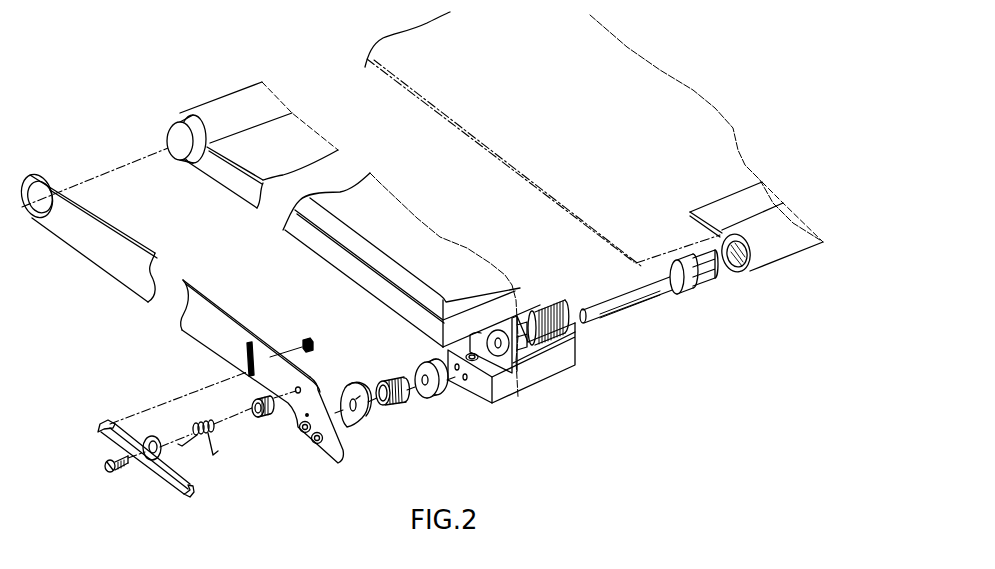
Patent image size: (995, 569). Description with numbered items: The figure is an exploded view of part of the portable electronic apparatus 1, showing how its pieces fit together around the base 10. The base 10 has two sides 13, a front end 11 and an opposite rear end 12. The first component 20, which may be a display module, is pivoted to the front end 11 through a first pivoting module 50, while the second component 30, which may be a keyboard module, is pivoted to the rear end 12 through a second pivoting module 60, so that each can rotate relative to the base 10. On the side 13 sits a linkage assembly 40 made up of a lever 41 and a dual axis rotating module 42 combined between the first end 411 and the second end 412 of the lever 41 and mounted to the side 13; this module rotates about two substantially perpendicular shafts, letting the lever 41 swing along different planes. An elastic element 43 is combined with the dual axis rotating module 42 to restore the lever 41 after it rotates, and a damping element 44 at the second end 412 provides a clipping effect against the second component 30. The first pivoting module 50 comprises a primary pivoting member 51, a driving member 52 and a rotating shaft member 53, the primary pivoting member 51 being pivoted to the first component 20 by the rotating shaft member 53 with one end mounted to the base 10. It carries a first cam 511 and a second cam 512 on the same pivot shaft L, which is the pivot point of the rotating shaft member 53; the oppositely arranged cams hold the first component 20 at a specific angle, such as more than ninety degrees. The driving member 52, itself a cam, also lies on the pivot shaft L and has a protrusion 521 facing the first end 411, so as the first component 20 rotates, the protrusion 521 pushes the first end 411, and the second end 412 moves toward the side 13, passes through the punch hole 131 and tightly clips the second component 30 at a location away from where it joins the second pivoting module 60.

The portable electronic apparatus 1 is at (716, 393).
The base 10 is at (87, 230).
The rear end 12 is at (45, 177).
The side 13 is at (257, 385).
The punch hole 131 is at (253, 343).
The front end 11 is at (333, 453).
The first component 20 is at (781, 270).
The second component 30 is at (338, 271).
The linkage assembly 40 is at (125, 474).
The lever 41 is at (156, 440).
The first end 411 is at (185, 498).
The second end 412 is at (98, 432).
The dual axis rotating module 42 is at (255, 418).
The elastic element 43 is at (215, 460).
The damping element 44 is at (315, 348).
The first pivoting module 50 is at (583, 364).
The primary pivoting member 51 is at (540, 378).
The first cam 511 is at (510, 362).
The second cam 512 is at (435, 399).
The driving member 52 is at (358, 428).
The protrusion 521 is at (370, 417).
The rotating shaft member 53 is at (659, 289).
The second pivoting module 60 is at (169, 126).
The pivot shaft L is at (388, 398).